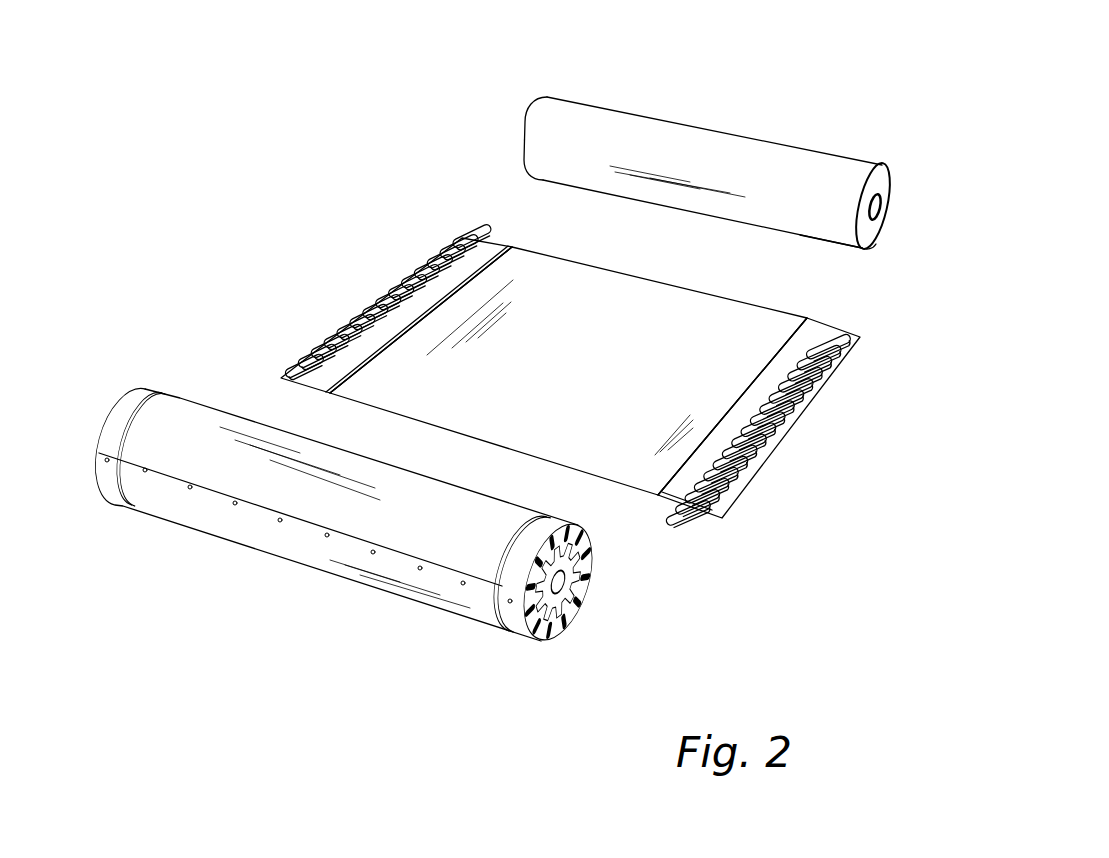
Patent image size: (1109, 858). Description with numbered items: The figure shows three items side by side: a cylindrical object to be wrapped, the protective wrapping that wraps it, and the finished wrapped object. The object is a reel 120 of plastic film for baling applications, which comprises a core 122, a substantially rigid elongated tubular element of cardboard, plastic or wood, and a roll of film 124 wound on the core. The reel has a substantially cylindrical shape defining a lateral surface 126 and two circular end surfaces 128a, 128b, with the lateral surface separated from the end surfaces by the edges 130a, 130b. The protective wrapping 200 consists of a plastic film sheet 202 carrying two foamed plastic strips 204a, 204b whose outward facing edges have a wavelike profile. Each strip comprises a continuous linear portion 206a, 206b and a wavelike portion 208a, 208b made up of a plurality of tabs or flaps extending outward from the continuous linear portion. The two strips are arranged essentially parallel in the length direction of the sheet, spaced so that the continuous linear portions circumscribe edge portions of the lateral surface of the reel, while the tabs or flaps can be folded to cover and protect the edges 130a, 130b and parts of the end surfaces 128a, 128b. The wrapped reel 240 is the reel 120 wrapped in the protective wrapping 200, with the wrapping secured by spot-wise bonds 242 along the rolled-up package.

The reel 120 is at (631, 213).
The core 122 is at (881, 165).
The roll of film 124 is at (865, 185).
The lateral surface 126 is at (637, 127).
The end surface 128a is at (530, 110).
The end surface 128b is at (884, 240).
The edge 130a is at (520, 152).
The edge 130b is at (877, 243).
The protective wrapping 200 is at (473, 449).
The plastic film sheet 202 is at (375, 400).
The foamed plastic strip 204a is at (490, 247).
The foamed plastic strip 204b is at (740, 493).
The continuous linear portion 206a is at (470, 268).
The continuous linear portion 206b is at (765, 358).
The wavelike portion 208a is at (385, 309).
The wavelike portion 208b is at (792, 397).
The wrapped reel 240 is at (338, 542).
The spot-wise bonds 242 is at (280, 524).